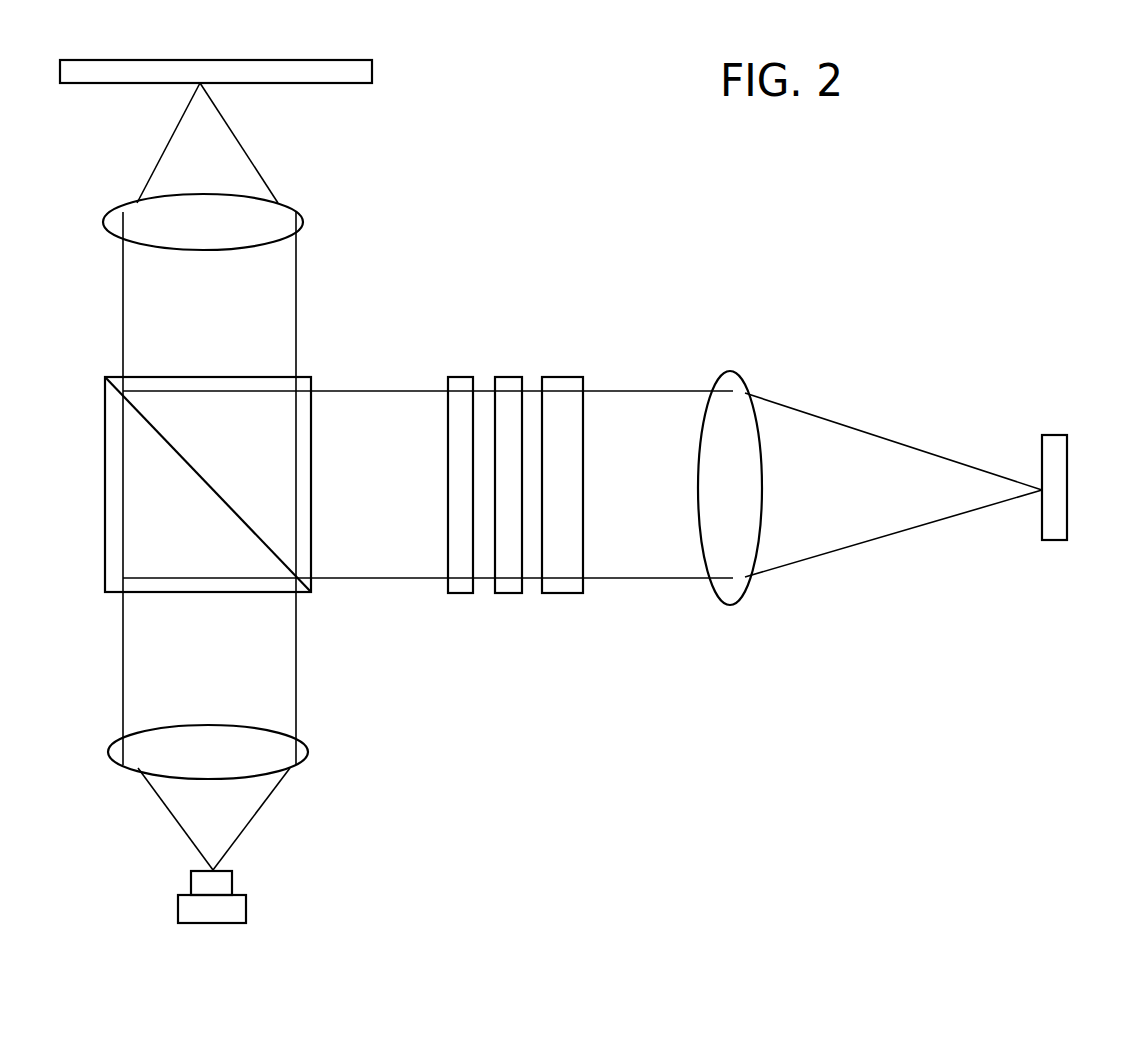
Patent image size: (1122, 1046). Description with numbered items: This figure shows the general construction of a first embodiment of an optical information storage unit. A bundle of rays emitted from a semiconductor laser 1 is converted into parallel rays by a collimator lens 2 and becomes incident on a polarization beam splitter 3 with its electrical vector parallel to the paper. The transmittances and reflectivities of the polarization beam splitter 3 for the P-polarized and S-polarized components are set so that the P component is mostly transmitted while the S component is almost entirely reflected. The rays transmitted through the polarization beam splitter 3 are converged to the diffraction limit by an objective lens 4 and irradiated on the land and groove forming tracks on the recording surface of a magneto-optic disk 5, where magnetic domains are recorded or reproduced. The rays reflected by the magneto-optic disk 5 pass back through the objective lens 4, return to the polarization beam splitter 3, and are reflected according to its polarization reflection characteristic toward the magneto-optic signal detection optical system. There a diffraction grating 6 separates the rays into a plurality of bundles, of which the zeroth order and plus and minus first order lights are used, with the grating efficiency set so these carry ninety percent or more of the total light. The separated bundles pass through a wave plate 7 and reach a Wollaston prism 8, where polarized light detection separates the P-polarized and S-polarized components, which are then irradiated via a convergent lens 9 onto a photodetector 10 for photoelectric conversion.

The semiconductor laser 1 is at (242, 908).
The collimator lens 2 is at (305, 752).
The polarization beam splitter 3 is at (123, 522).
The objective lens 4 is at (297, 220).
The magneto-optic disk 5 is at (365, 73).
The diffraction grating 6 is at (463, 585).
The wave plate 7 is at (512, 385).
The Wollaston prism 8 is at (567, 587).
The convergent lens 9 is at (733, 382).
The photodetector 10 is at (1055, 445).